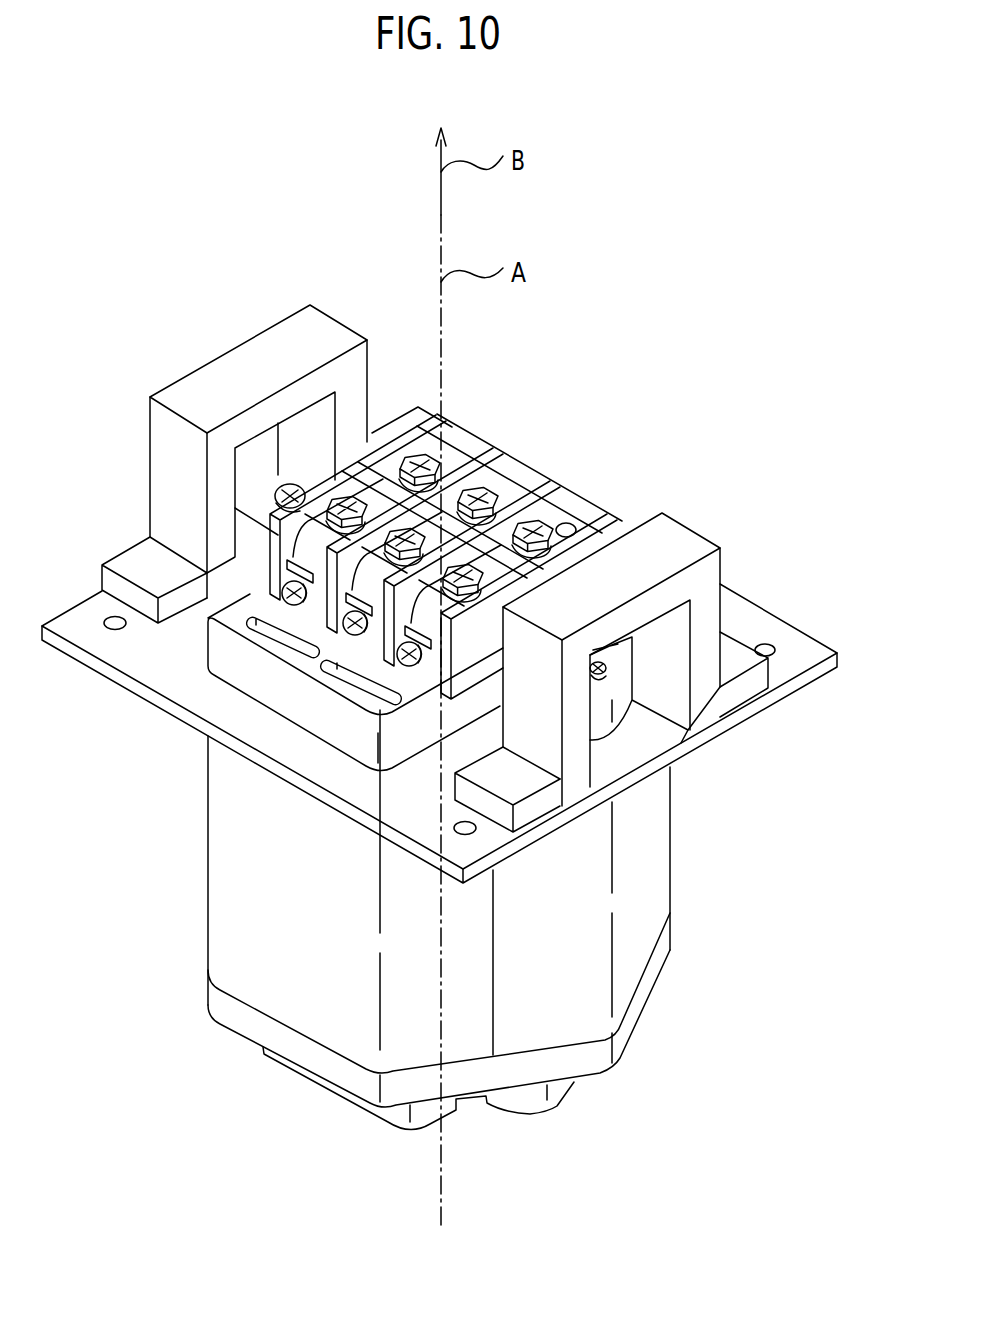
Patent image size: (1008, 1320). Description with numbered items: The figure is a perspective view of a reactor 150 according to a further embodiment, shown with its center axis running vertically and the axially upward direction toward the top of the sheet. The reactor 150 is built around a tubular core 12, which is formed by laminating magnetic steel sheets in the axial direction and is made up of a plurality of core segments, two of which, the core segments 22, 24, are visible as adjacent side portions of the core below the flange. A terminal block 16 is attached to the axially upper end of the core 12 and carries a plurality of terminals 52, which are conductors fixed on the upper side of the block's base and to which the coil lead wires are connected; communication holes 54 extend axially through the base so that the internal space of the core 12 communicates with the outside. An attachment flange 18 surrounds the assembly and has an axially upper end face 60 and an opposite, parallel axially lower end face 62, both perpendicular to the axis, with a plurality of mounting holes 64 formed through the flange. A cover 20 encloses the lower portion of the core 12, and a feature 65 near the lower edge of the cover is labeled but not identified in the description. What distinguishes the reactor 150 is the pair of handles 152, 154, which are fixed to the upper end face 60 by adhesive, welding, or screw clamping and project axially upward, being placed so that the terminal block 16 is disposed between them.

The core 12 is at (190, 820).
The terminal block 16 is at (243, 588).
The attachment flange 18 is at (753, 598).
The cover 20 is at (240, 1034).
The core segment 22 is at (298, 913).
The core segment 24 is at (570, 943).
The terminals 52 is at (458, 433).
The communication holes 54 is at (340, 680).
The axially upper end face 60 is at (816, 650).
The axially lower end face 62 is at (755, 718).
The mounting holes 64 is at (112, 627).
The flange 65 is at (213, 1020).
The reactor 150 is at (835, 191).
The handle 152 is at (237, 363).
The handle 154 is at (675, 542).